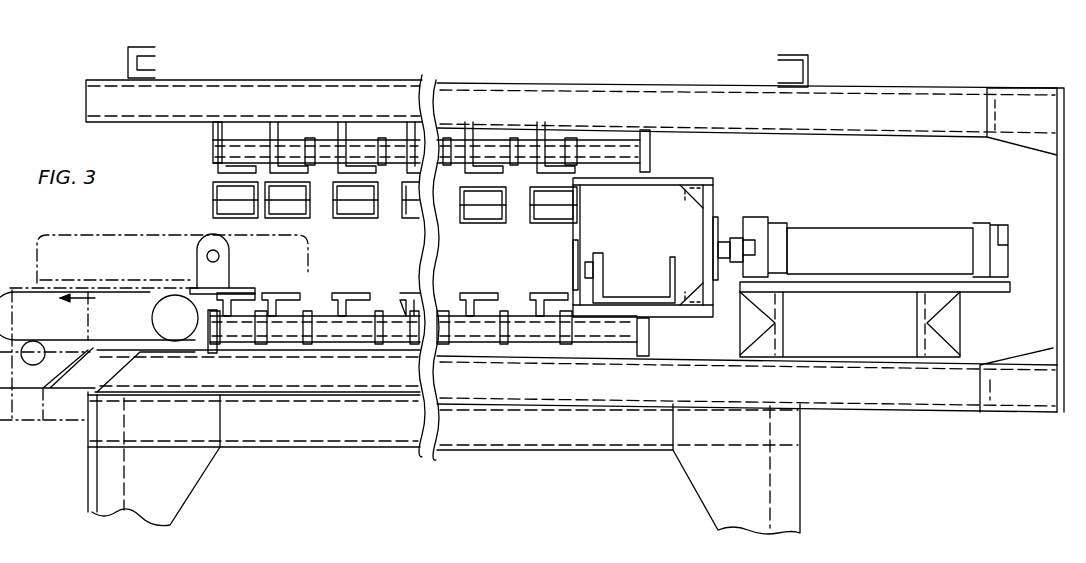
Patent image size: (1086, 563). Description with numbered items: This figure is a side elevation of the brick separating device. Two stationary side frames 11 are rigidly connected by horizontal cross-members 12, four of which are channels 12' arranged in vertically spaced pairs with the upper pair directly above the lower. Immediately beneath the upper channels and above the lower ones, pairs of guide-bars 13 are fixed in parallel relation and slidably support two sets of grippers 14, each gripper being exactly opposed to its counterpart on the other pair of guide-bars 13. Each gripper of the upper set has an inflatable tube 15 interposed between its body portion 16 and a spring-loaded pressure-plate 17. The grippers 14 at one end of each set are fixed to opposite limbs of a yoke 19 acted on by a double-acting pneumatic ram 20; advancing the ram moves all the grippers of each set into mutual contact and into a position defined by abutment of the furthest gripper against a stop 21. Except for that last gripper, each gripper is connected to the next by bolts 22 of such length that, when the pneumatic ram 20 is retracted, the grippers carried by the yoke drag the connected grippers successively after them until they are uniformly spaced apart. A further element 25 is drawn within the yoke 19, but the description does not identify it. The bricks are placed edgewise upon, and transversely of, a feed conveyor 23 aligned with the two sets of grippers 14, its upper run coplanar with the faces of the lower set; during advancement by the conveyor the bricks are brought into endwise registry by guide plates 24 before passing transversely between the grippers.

The side frame 11 is at (127, 62).
The cross-member 12 is at (443, 442).
The channel 12' is at (575, 253).
The guide-bar 13 is at (393, 146).
The gripper 14 is at (379, 222).
The inflatable tube 15 is at (478, 222).
The body portion 16 is at (487, 193).
The spring-loaded pressure-plate 17 is at (540, 222).
The yoke 19 is at (712, 312).
The double-acting pneumatic ram 20 is at (832, 242).
The stop 21 is at (213, 140).
The bolt 22 is at (444, 457).
The feed conveyor 23 is at (28, 287).
The guide plate 24 is at (137, 255).
The bracket 25 is at (580, 258).